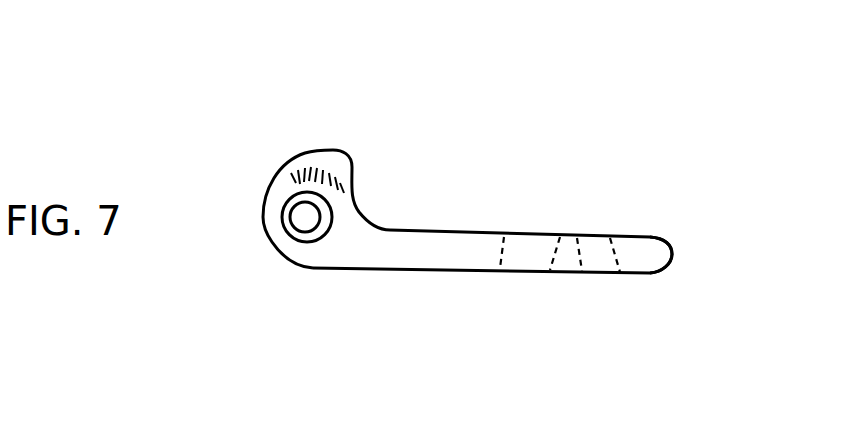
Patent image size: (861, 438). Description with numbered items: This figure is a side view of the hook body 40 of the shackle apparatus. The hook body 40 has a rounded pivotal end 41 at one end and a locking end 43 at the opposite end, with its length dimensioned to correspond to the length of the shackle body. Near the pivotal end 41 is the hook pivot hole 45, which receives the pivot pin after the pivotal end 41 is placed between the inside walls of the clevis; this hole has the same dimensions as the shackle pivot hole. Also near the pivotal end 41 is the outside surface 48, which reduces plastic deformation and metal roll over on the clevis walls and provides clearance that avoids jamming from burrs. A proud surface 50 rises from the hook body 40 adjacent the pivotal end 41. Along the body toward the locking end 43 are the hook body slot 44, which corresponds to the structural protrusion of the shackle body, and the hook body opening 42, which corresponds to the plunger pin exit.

The hook body 40 is at (168, 103).
The pivotal end 41 is at (325, 247).
The hook body opening 42 is at (602, 248).
The locking end 43 is at (643, 253).
The hook body slot 44 is at (532, 257).
The hook pivot hole 45 is at (305, 217).
The outside surface 48 is at (312, 177).
The proud surface 50 is at (353, 200).